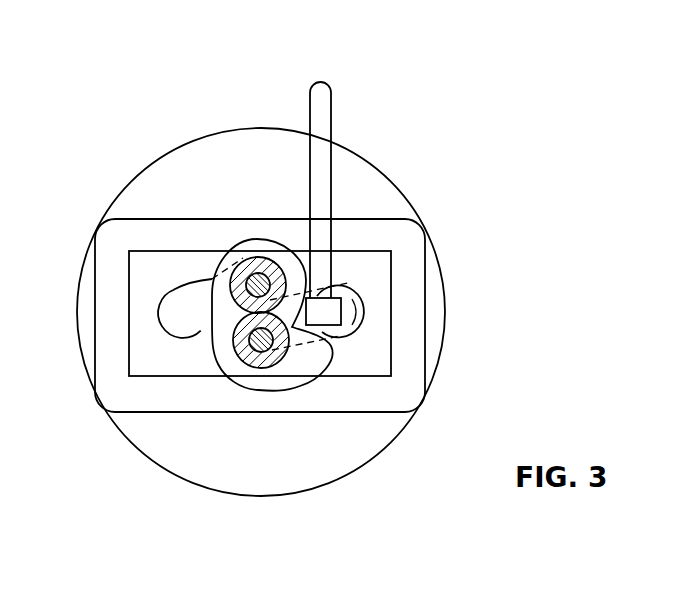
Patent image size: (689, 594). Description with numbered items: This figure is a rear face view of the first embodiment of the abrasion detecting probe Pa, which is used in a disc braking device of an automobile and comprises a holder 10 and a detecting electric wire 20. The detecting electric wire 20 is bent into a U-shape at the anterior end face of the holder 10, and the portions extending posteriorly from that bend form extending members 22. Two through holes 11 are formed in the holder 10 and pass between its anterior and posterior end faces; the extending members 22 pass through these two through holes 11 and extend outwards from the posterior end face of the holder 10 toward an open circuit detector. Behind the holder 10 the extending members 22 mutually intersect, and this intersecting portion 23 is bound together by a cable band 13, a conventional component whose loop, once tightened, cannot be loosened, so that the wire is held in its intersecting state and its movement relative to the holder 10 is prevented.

The holder 10 is at (207, 167).
The through holes 11 is at (352, 332).
The cable band 13 is at (274, 375).
The detecting electric wire 20 is at (277, 309).
The extending members 22 is at (183, 310).
The intersecting portion 23 is at (256, 356).
The abrasion detecting probe Pa is at (391, 125).